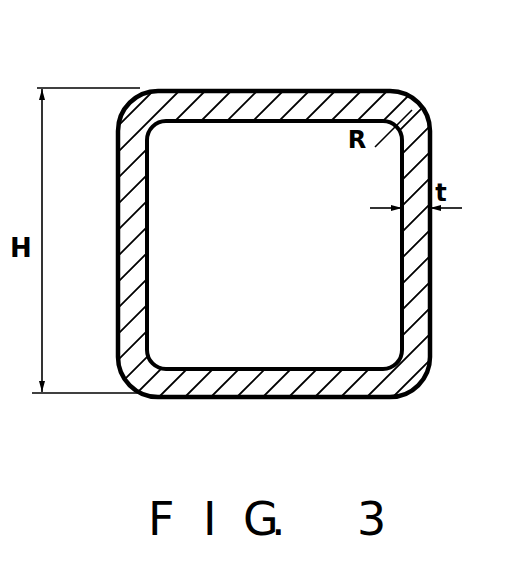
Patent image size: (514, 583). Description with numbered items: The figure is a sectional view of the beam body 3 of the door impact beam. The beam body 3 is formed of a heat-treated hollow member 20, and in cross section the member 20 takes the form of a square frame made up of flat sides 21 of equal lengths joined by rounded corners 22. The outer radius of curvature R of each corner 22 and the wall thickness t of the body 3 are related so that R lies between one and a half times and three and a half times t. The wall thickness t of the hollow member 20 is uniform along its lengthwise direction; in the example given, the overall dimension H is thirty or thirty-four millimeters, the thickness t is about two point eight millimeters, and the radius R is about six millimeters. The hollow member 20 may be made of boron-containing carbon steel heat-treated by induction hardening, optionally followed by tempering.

The hollow member 20 is at (331, 88).
The flat sides 21 is at (243, 90).
The rounded corners 22 is at (424, 109).
The beam body 3 is at (425, 337).